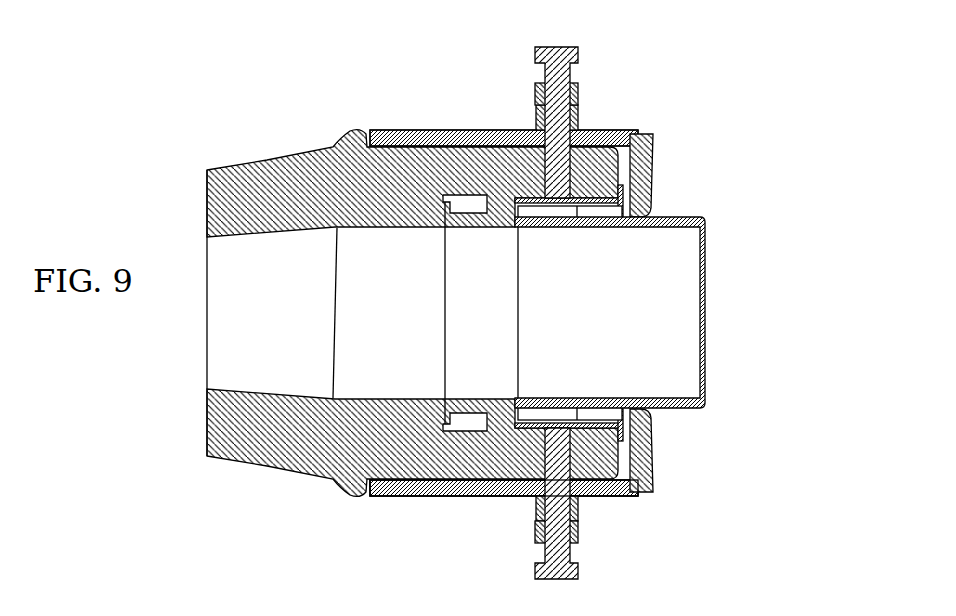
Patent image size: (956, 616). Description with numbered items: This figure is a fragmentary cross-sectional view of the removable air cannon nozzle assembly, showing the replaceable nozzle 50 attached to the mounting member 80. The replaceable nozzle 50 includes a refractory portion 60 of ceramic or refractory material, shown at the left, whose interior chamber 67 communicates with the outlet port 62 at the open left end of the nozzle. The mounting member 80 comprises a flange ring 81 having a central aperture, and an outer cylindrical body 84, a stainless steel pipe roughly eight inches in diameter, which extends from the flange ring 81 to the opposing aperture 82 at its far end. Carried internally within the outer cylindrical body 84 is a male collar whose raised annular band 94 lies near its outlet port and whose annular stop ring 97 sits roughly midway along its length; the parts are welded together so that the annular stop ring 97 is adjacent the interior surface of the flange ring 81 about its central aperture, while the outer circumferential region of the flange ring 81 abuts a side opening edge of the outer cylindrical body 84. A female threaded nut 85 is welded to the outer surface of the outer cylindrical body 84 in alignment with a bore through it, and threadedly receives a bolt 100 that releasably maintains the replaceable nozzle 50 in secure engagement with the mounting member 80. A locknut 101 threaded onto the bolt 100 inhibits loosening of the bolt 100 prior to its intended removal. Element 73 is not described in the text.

The replaceable nozzle 50 is at (452, 196).
The refractory portion 60 is at (248, 463).
The outlet port 62 is at (212, 377).
The interior chamber 67 is at (390, 373).
The seal ring 73 is at (640, 212).
The mounting member 80 is at (461, 505).
The flange ring 81 is at (652, 143).
The opposing aperture 82 is at (373, 128).
The outer cylindrical body 84 is at (432, 128).
The female threaded nut 85 is at (582, 115).
The raised annular band 94 is at (549, 226).
The annular stop ring 97 is at (653, 180).
The bolt 100 is at (582, 53).
The locknut 101 is at (582, 88).